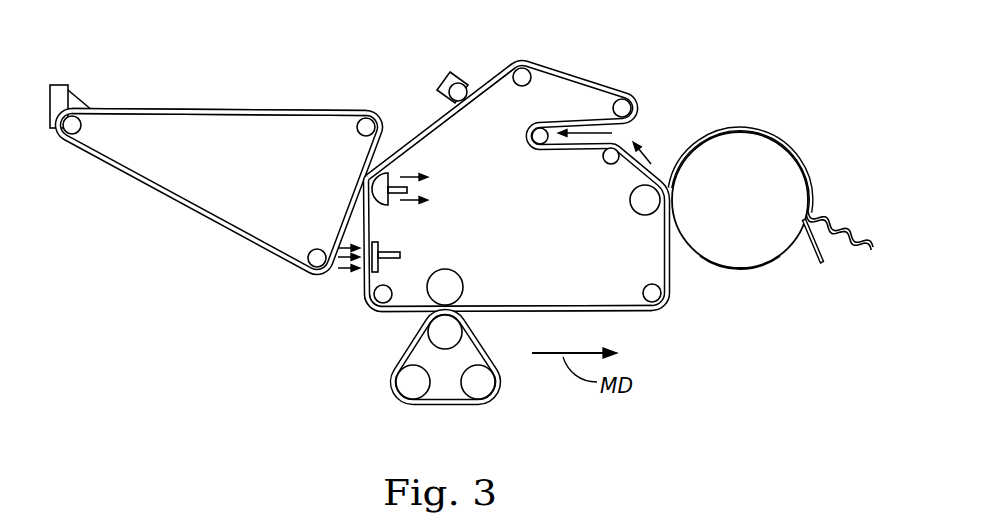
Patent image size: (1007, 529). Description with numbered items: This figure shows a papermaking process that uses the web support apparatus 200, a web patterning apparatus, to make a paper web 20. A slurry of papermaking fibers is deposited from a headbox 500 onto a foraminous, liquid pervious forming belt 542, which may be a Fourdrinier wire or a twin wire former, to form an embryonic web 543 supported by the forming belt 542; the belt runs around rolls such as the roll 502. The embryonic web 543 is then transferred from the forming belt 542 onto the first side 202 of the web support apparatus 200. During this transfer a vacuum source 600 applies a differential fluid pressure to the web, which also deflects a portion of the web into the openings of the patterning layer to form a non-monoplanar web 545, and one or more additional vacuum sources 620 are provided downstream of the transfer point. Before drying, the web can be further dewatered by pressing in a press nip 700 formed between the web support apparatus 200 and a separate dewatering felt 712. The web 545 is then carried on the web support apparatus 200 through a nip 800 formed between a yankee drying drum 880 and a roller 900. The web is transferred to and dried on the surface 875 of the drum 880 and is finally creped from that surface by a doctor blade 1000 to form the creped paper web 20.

The headbox 500 is at (64, 91).
The embryonic web 543 is at (233, 108).
The forming belt 542 is at (248, 118).
The forming roll 502 is at (362, 130).
The web support apparatus 200 is at (573, 68).
The first side 202 is at (418, 135).
The non-monoplanar web 545 is at (389, 313).
The vacuum source 600 is at (390, 206).
The additional vacuum source 620 is at (402, 256).
The press nip 700 is at (465, 297).
The dewatering felt 712 is at (495, 358).
The nip 800 is at (663, 185).
The roller 900 is at (638, 207).
The yankee drying drum 880 is at (757, 253).
The surface of the drum 875 is at (712, 268).
The doctor blade 1000 is at (822, 263).
The creped paper web 20 is at (828, 205).